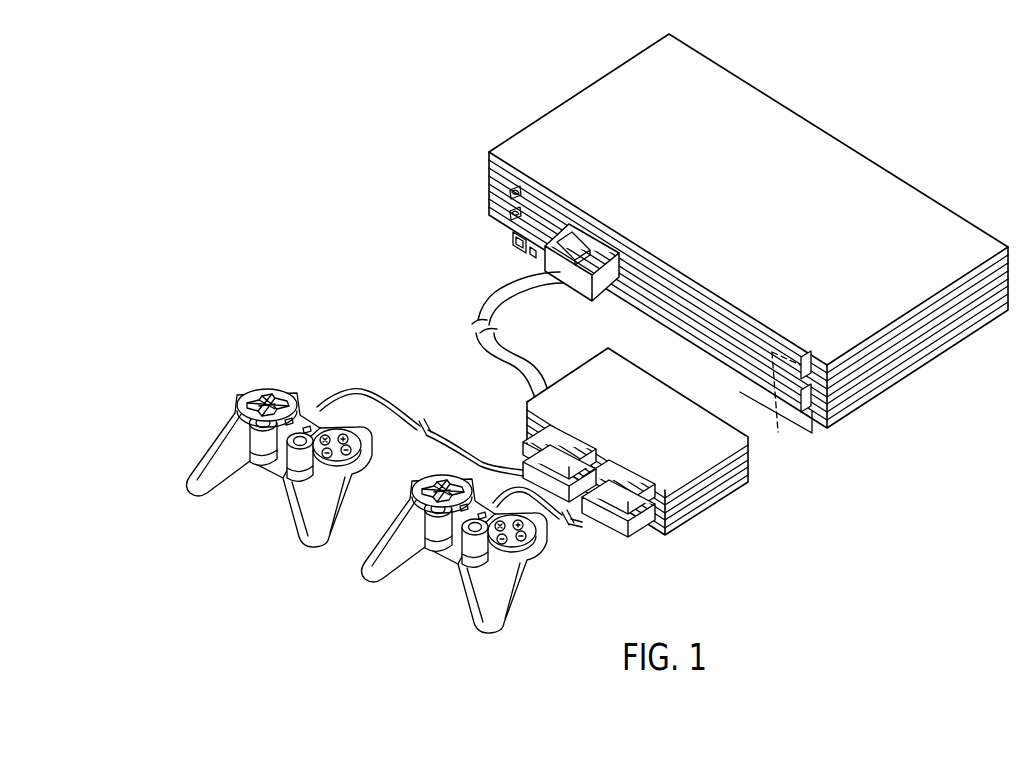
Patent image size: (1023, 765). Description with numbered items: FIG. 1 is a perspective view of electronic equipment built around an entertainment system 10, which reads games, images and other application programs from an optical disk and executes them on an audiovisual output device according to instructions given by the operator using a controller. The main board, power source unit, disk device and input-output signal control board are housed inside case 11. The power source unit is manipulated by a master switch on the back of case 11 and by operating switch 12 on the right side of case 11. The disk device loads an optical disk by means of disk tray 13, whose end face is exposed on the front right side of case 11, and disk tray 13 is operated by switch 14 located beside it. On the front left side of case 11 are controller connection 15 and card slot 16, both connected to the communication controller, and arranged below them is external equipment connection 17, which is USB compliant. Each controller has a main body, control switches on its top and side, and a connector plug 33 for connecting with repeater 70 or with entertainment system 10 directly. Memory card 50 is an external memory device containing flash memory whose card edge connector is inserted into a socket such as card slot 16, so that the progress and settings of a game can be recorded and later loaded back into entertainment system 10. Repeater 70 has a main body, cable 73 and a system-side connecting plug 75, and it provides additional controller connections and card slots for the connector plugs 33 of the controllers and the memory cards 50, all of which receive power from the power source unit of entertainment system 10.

The entertainment system 10 is at (725, 250).
The case 11 is at (538, 138).
The operating switch 12 is at (796, 376).
The disk tray 13 is at (782, 406).
The switch 14 is at (816, 423).
The controller connection 15 is at (511, 230).
The card slot 16 is at (508, 200).
The external equipment connection 17 is at (521, 251).
The connector plug 33 is at (525, 470).
The memory card 50 is at (530, 433).
The repeater 70 is at (683, 463).
The cable 73 is at (490, 303).
The system-side connecting plug 75 is at (604, 286).